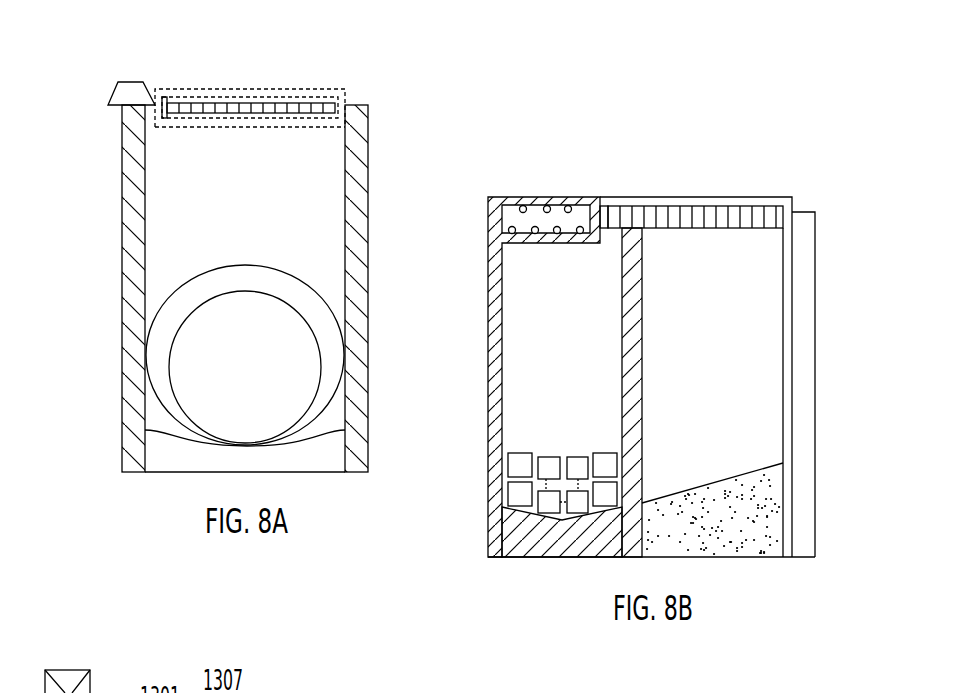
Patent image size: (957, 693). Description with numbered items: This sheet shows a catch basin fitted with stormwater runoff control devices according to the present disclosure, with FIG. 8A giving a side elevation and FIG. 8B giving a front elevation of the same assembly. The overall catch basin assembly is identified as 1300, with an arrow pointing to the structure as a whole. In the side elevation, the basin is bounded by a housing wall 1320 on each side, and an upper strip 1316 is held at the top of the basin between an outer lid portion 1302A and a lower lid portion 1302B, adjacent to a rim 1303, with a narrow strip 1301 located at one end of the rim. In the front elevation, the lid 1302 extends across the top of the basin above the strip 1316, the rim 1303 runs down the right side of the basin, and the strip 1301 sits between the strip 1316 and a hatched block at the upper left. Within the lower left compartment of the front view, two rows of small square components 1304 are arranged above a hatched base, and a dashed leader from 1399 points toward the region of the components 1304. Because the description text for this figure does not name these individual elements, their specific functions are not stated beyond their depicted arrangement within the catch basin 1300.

In FIG. 8A, the fuel cell assembly 1300 is at (106, 331).
In FIG. 8A, the sealing strip 1301 is at (162, 97).
In FIG. 8B, the sealing strip 1301 is at (605, 211).
In FIG. 8B, the housing lid 1302 is at (792, 197).
In FIG. 8A, the lid upper portion 1302A is at (327, 88).
In FIG. 8A, the lid lower portion 1302B is at (322, 127).
In FIG. 8A, the lid rim 1303 is at (342, 101).
In FIG. 8B, the lid rim 1303 is at (790, 213).
In FIG. 8B, the electronic components 1304 is at (519, 462).
In FIG. 8A, the ribbed strip 1316 is at (181, 108).
In FIG. 8B, the ribbed strip 1316 is at (738, 229).
In FIG. 8A, the housing wall 1320 is at (352, 235).
In FIG. 8B, the gap 1399 is at (540, 490).